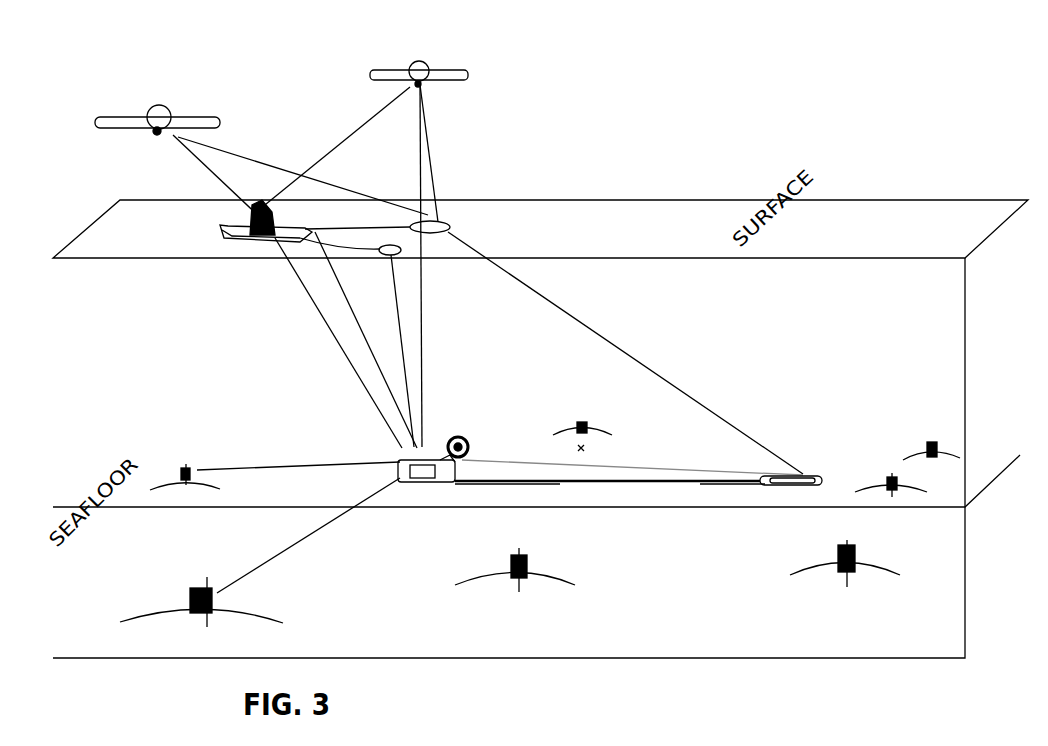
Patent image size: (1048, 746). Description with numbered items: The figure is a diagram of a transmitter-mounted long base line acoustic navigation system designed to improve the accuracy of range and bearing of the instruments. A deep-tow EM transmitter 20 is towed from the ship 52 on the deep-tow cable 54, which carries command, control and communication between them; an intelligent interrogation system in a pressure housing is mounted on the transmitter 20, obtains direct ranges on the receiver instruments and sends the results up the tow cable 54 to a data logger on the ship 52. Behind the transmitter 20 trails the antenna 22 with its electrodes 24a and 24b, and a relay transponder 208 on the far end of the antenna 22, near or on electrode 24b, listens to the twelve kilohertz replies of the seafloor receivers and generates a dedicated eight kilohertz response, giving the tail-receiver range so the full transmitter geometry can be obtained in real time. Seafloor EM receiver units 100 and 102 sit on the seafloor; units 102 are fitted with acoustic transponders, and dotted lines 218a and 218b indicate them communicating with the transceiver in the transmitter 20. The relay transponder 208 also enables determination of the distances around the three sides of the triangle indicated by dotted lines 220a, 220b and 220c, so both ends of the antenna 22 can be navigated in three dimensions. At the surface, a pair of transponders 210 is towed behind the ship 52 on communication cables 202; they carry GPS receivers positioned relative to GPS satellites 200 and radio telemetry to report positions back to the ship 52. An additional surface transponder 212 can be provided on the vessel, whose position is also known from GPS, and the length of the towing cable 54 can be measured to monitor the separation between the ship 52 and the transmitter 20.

The deep-tow EM transmitter 20 is at (397, 450).
The antenna 22 is at (663, 485).
The electrode 24a is at (498, 488).
The electrode 24b is at (780, 485).
The ship 52 is at (250, 237).
The deep-tow cable 54 is at (343, 292).
The seafloor EM receiver unit 100 is at (888, 477).
The seafloor unit 102 is at (190, 590).
The GPS satellite 200 is at (408, 73).
The communication cable 202 is at (337, 237).
The relay transponder 208 is at (818, 474).
The surface transponder 210 is at (428, 214).
The additional surface transponder 212 is at (280, 240).
The dotted line 218a is at (363, 500).
The dotted line 218b is at (255, 465).
The dotted line 220a is at (507, 270).
The dotted line 220b is at (434, 325).
The dotted line 220c is at (490, 447).